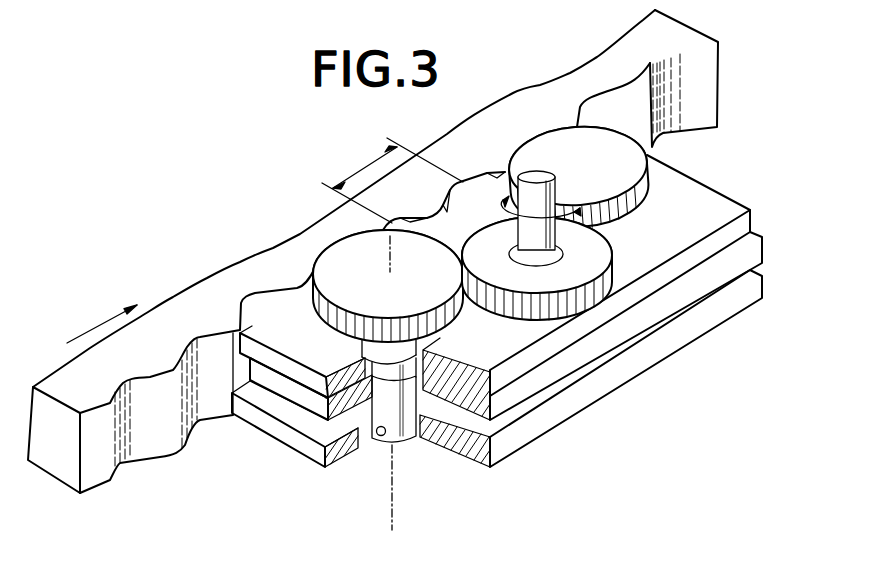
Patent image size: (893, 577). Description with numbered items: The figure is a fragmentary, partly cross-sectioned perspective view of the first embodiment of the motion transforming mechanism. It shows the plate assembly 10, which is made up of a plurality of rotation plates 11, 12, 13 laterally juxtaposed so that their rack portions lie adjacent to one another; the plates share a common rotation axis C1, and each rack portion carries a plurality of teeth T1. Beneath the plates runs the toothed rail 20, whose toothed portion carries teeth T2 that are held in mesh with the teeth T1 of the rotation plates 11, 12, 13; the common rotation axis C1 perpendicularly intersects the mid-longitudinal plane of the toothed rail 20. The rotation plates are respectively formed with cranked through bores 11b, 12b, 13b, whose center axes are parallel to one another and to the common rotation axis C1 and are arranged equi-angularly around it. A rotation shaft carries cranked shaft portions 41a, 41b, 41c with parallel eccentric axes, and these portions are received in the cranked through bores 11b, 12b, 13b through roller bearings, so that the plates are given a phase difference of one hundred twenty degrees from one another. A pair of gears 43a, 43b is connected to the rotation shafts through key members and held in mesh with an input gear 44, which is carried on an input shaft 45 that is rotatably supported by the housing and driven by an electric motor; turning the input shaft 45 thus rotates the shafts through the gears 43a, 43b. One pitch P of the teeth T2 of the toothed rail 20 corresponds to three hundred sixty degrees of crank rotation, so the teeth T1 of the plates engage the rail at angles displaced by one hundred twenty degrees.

The plate assembly 10 is at (507, 324).
The rotation plate 11 is at (495, 287).
The cranked through bore 11b is at (432, 352).
The rotation plate 12 is at (506, 364).
The cranked through bore 12b is at (335, 428).
The rotation plate 13 is at (497, 388).
The cranked through bore 13b is at (379, 436).
The toothed rail 20 is at (197, 291).
The cranked shaft portion 41a is at (368, 368).
The cranked shaft portion 41b is at (417, 433).
The cranked shaft portion 41c is at (405, 440).
The gear 43a is at (335, 262).
The gear 43b is at (632, 170).
The input gear 44 is at (598, 257).
The input shaft 45 is at (530, 180).
The pitch P is at (392, 180).
The teeth T1 is at (260, 293).
The teeth T2 is at (102, 478).
The common rotation axis C1 is at (392, 513).